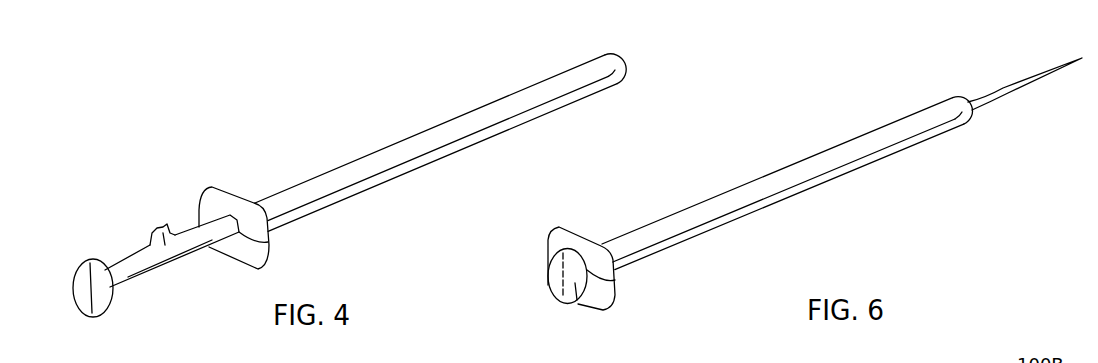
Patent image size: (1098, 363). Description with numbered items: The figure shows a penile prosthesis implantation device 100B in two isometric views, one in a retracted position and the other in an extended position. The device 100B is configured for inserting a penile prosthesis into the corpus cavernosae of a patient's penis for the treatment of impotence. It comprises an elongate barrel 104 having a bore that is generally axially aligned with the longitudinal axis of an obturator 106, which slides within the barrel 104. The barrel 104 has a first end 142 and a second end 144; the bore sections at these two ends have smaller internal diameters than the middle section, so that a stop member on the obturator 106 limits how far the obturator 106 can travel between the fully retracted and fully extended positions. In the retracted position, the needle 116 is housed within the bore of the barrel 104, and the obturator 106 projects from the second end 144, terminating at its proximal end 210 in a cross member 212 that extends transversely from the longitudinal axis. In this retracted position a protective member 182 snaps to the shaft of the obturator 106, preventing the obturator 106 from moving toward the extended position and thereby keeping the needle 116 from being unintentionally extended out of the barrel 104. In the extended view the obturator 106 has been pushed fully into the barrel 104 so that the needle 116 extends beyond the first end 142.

In FIG. 4, the penile prosthesis implantation device 100B is at (170, 113).
In FIG. 6, the penile prosthesis implantation device 100B is at (805, 98).
In FIG. 4, the barrel 104 is at (357, 160).
In FIG. 6, the barrel 104 is at (767, 183).
In FIG. 4, the obturator 106 is at (167, 265).
In FIG. 6, the obturator 106 is at (576, 285).
In FIG. 6, the needle 116 is at (1037, 70).
In FIG. 4, the first end 142 is at (596, 62).
In FIG. 6, the first end 142 is at (942, 107).
In FIG. 4, the second end 144 is at (270, 202).
In FIG. 6, the second end 144 is at (677, 220).
In FIG. 4, the protective member 182 is at (157, 233).
In FIG. 4, the proximal end 210 is at (108, 310).
In FIG. 4, the cross member 212 is at (80, 267).